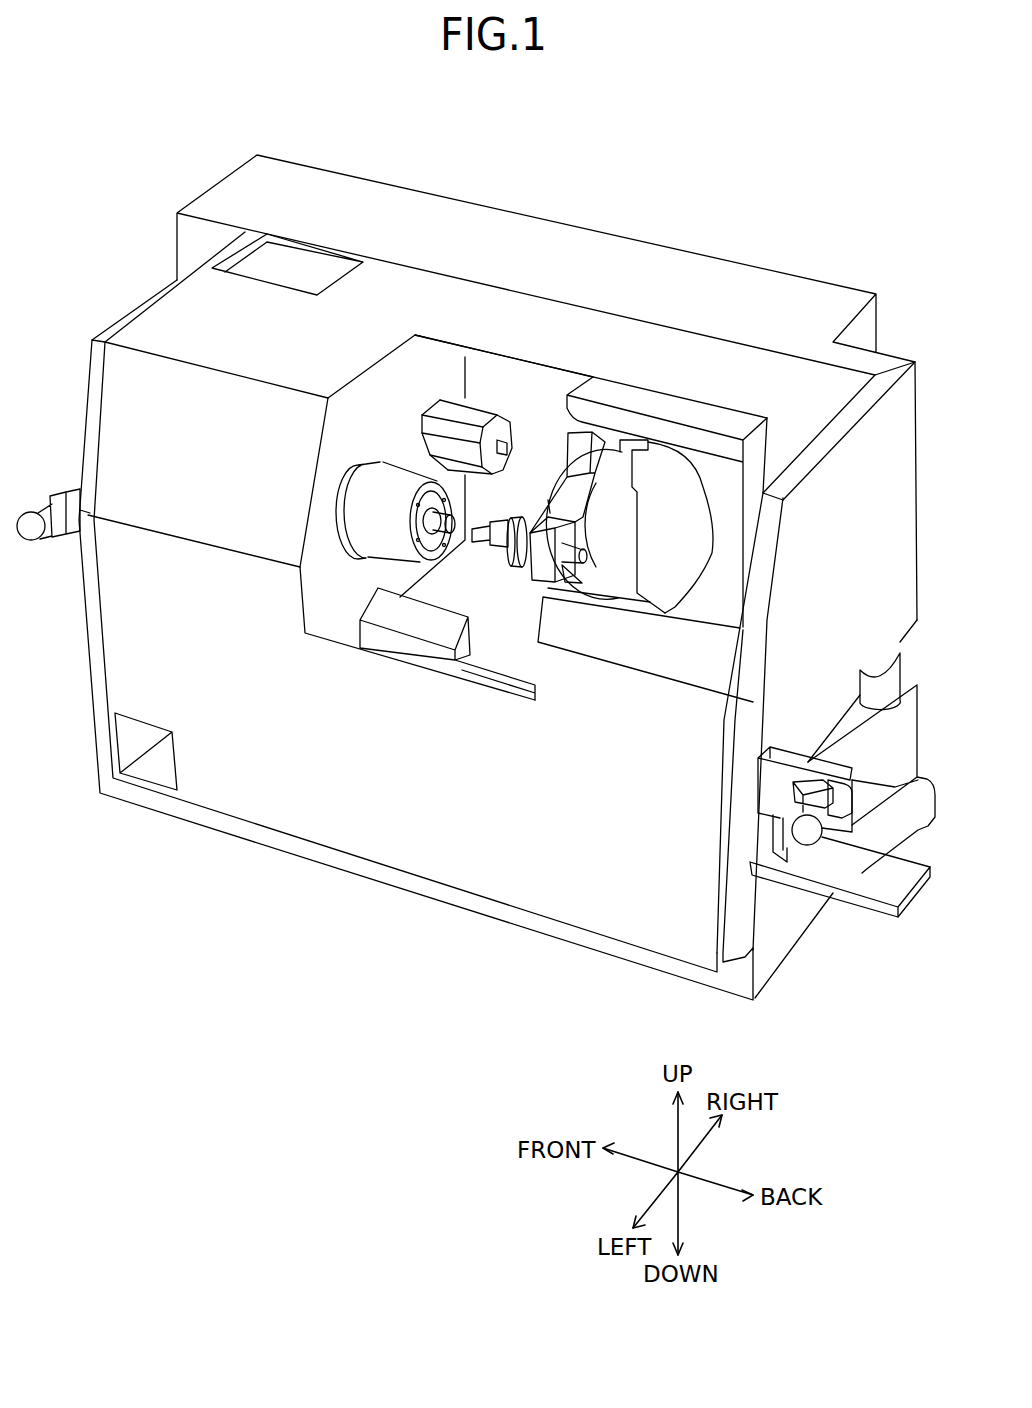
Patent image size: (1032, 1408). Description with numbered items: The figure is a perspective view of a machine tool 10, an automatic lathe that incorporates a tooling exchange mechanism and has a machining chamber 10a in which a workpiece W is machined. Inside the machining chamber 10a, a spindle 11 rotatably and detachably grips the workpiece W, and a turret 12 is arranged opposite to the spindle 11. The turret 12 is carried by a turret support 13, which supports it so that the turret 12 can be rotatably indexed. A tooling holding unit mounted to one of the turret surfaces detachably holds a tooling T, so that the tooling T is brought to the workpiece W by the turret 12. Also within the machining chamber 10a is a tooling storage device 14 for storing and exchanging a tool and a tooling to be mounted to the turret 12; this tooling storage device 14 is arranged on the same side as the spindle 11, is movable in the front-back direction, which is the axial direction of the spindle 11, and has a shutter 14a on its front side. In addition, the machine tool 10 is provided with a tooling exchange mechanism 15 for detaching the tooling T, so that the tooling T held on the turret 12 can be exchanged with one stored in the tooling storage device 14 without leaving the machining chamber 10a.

The machine tool 10 is at (790, 230).
The machining chamber 10a is at (552, 388).
The spindle 11 is at (385, 452).
The turret 12 is at (513, 588).
The turret support 13 is at (668, 577).
The tooling storage device 14 is at (457, 397).
The shutter 14a is at (507, 452).
The tooling exchange mechanism 15 is at (515, 393).
The workpiece W is at (413, 560).
The tooling T is at (527, 517).